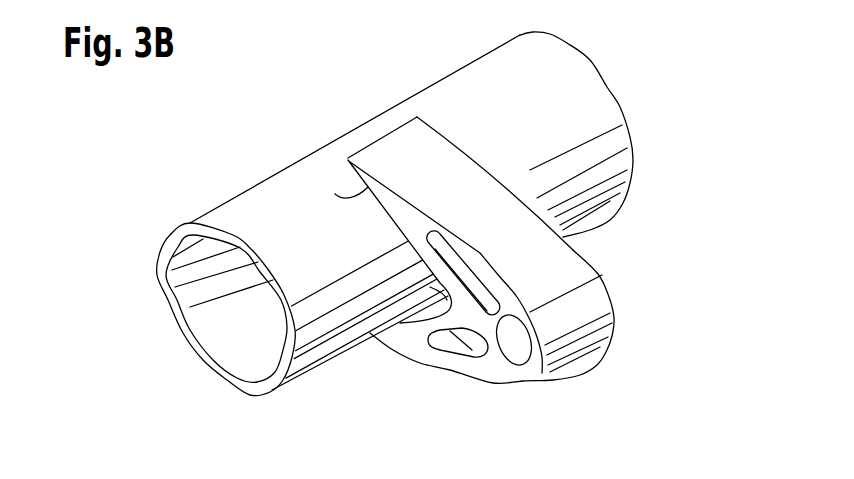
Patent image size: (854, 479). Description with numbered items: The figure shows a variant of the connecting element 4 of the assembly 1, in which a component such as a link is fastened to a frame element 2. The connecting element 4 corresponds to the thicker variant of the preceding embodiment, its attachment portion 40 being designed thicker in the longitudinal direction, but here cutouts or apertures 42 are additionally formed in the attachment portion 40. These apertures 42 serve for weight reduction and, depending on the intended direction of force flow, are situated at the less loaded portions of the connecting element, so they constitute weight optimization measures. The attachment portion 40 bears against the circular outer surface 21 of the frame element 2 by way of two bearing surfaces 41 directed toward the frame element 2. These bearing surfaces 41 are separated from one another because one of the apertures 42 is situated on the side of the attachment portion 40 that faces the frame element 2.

The assembly 1 is at (737, 38).
The frame element 2 is at (463, 75).
The circular outer surface 21 is at (570, 74).
The connecting element 4 is at (613, 282).
The attachment portion 40 is at (567, 323).
The bearing surface 41 is at (335, 194).
The apertures 42 is at (468, 347).